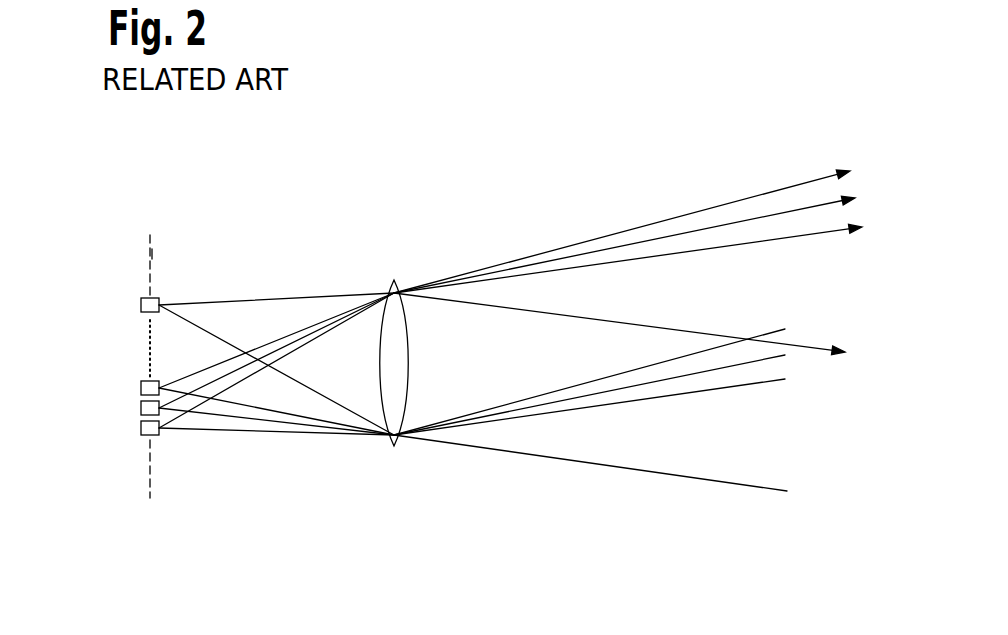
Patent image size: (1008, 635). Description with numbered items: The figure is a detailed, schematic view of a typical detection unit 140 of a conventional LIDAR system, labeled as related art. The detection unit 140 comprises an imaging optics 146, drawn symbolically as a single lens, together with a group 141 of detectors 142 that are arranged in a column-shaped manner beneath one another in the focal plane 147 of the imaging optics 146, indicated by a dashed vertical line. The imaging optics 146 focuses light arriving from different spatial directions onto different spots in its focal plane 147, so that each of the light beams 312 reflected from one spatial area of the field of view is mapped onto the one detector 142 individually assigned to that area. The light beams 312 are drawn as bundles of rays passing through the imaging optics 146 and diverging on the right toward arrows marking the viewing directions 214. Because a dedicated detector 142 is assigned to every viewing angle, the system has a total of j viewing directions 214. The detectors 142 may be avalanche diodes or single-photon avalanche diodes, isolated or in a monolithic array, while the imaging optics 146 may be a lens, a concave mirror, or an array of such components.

The detection unit 140 is at (281, 508).
The group of detectors 141 is at (122, 248).
The focal plane 147 is at (152, 254).
The detectors 142 is at (105, 382).
The imaging optics 146 is at (394, 447).
The light beams 312 is at (623, 256).
The viewing directions 214 is at (787, 272).